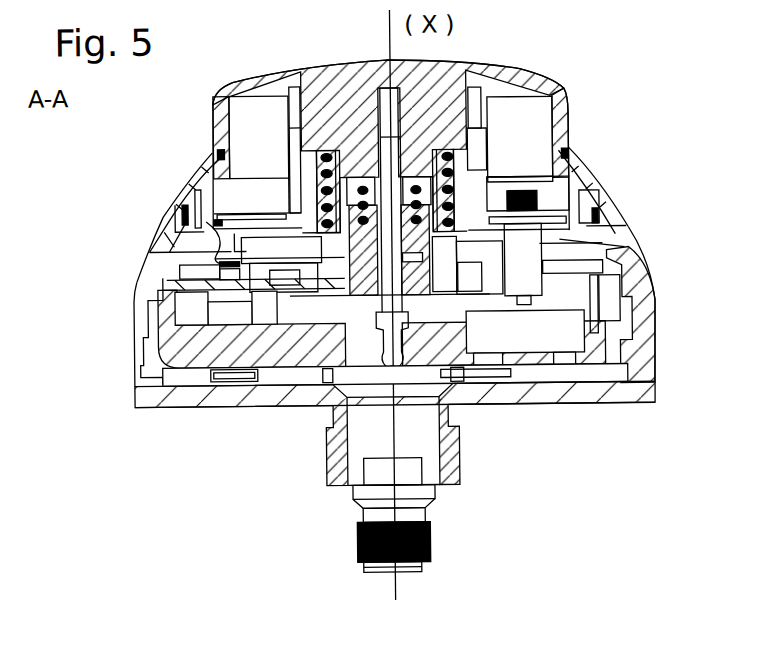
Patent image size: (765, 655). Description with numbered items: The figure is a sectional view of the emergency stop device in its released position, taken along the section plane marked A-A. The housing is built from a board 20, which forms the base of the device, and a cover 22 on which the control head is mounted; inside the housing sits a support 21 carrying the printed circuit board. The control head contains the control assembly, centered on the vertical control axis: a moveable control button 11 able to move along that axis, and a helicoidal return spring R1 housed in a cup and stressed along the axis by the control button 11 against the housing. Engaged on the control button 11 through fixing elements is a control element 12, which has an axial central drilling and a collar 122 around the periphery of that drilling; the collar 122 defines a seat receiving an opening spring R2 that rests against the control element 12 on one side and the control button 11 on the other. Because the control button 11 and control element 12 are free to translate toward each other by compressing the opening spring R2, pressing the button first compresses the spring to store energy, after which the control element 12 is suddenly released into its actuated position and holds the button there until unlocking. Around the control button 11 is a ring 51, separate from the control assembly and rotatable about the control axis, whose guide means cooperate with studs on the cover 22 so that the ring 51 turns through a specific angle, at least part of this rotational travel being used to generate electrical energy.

The control button 11 is at (564, 110).
The control element 12 is at (420, 268).
The collar 122 is at (361, 180).
The return spring R1 is at (322, 170).
The opening spring R2 is at (414, 187).
The ring 51 is at (190, 186).
The cover 22 is at (152, 269).
The support 21 is at (170, 333).
The board 20 is at (143, 392).